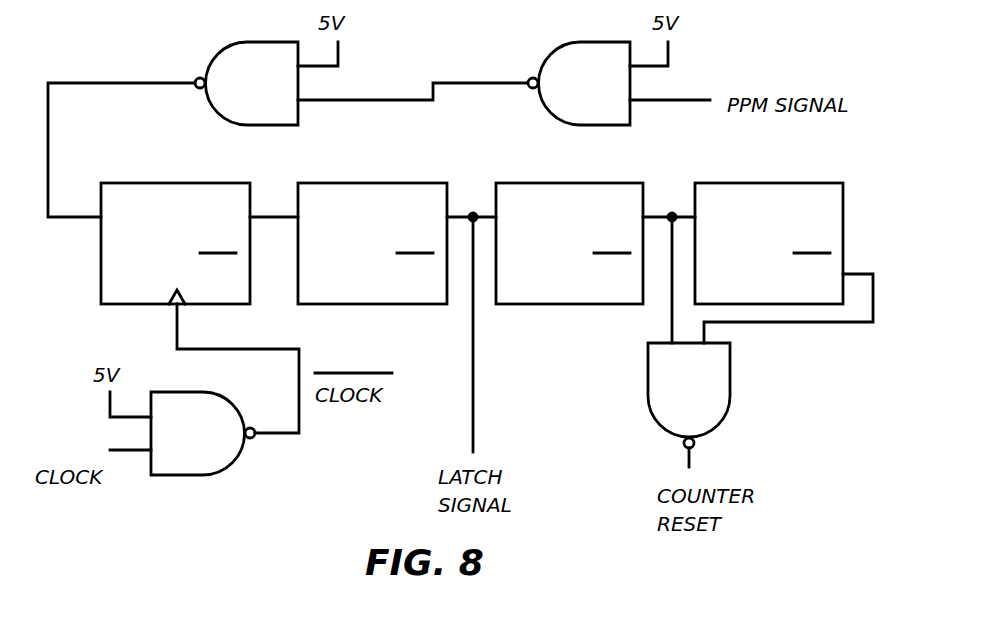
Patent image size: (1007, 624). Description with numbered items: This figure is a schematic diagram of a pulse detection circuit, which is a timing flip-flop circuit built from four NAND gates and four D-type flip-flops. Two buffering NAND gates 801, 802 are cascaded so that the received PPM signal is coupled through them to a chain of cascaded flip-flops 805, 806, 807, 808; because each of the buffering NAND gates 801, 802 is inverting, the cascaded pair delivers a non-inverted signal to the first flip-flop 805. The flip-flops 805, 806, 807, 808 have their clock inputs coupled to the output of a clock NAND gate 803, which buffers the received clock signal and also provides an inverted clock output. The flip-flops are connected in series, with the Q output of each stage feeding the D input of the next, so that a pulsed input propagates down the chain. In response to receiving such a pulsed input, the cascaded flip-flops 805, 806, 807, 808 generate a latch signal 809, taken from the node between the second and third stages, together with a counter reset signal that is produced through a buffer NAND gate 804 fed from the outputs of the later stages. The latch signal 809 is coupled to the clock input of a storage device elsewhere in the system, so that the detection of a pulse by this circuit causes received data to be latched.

The buffering NAND gate 801 is at (573, 43).
The buffering NAND gate 802 is at (229, 43).
The clock NAND gate 803 is at (208, 476).
The buffer NAND gate 804 is at (732, 381).
The flip-flop 805 is at (185, 183).
The flip-flop 806 is at (362, 183).
The flip-flop 807 is at (555, 183).
The flip-flop 808 is at (777, 183).
The latch signal 809 is at (473, 215).